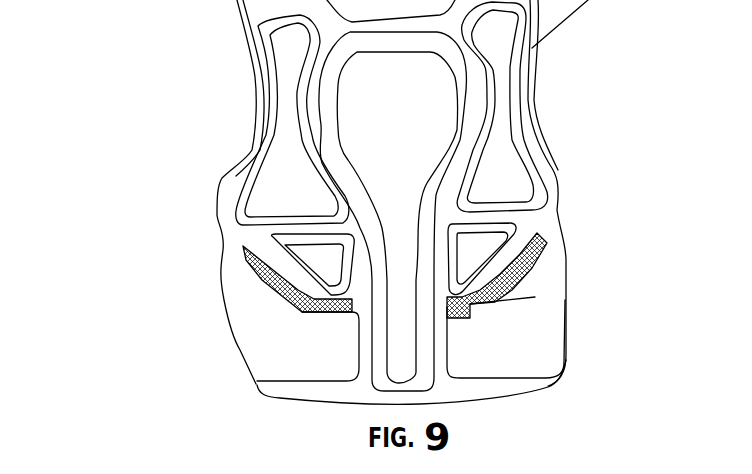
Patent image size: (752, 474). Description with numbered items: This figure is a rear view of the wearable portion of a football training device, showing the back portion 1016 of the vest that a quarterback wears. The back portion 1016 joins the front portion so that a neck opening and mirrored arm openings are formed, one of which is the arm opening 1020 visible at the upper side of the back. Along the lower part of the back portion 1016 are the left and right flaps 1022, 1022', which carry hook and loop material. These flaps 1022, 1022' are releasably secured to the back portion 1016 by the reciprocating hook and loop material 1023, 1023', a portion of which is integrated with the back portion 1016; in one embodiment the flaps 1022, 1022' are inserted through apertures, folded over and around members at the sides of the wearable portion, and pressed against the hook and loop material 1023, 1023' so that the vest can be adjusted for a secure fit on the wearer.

The left arm opening 1020 is at (258, 78).
The back portion 1016 is at (457, 210).
The hook and loop material 1023 is at (234, 273).
The hook and loop material 1023' is at (543, 274).
The left flap 1022 is at (196, 347).
The right flap 1022' is at (570, 337).